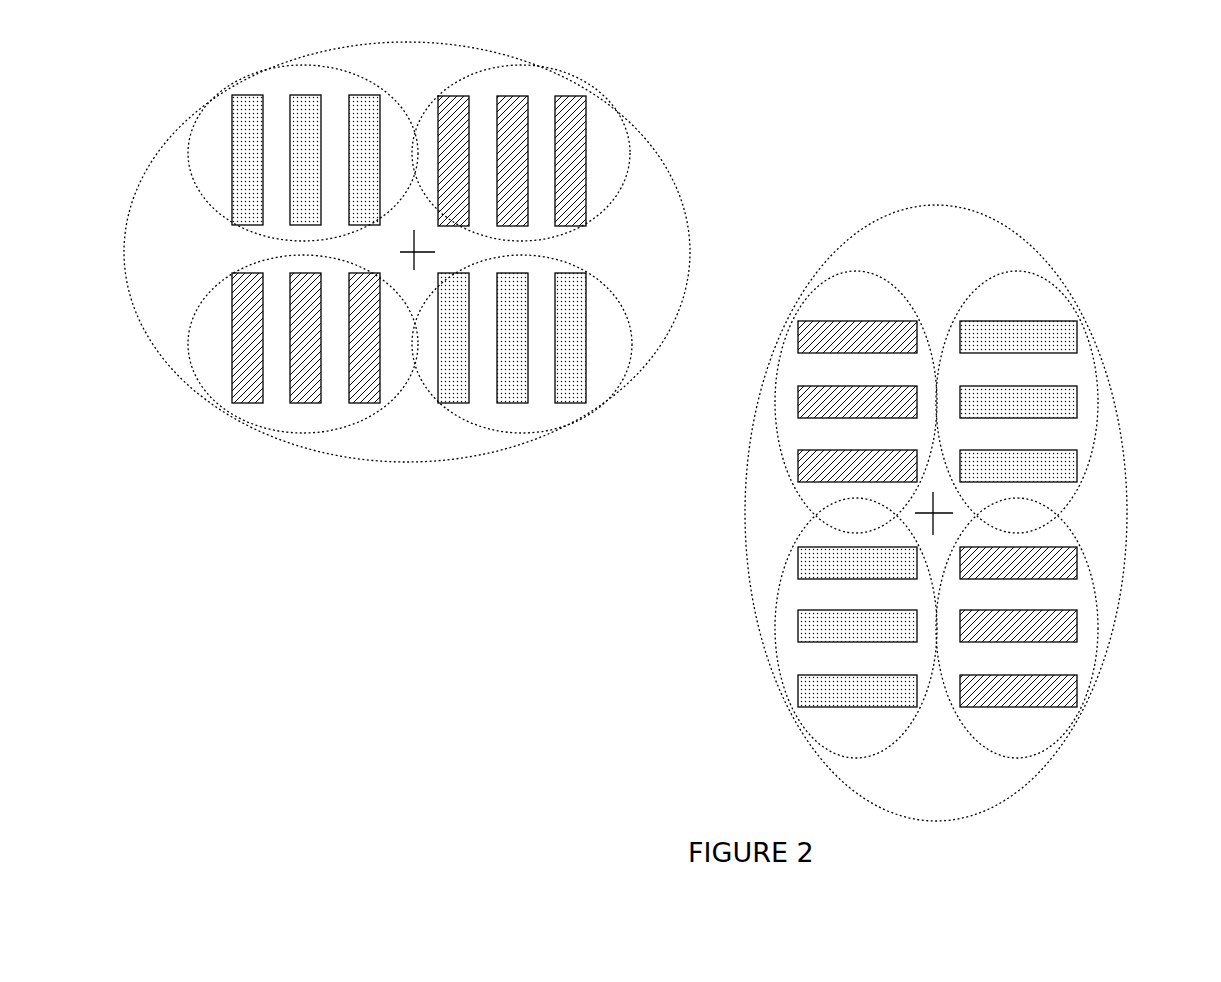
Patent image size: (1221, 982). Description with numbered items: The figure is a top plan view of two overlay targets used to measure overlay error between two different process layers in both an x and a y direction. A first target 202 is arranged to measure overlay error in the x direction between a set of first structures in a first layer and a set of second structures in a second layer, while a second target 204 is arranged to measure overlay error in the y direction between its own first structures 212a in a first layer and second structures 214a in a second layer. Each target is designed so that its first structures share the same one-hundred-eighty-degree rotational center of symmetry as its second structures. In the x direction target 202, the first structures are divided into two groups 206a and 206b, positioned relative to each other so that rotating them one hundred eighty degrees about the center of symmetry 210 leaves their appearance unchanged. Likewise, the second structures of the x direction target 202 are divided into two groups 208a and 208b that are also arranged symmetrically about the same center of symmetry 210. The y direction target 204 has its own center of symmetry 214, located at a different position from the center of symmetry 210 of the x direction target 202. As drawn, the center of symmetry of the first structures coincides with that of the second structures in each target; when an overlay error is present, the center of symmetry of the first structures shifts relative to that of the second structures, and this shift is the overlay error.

The first target 202 is at (660, 158).
The second target 204 is at (934, 180).
The first group of first structures 206a is at (190, 155).
The second group of first structures 206b is at (527, 438).
The first group of second structures 208a is at (315, 435).
The second group of second structures 208b is at (620, 199).
The center of symmetry 210 is at (395, 256).
The first structures of second target 212a is at (1100, 352).
The center of symmetry of second target 214 is at (915, 515).
The second structures of second target 214a is at (776, 404).